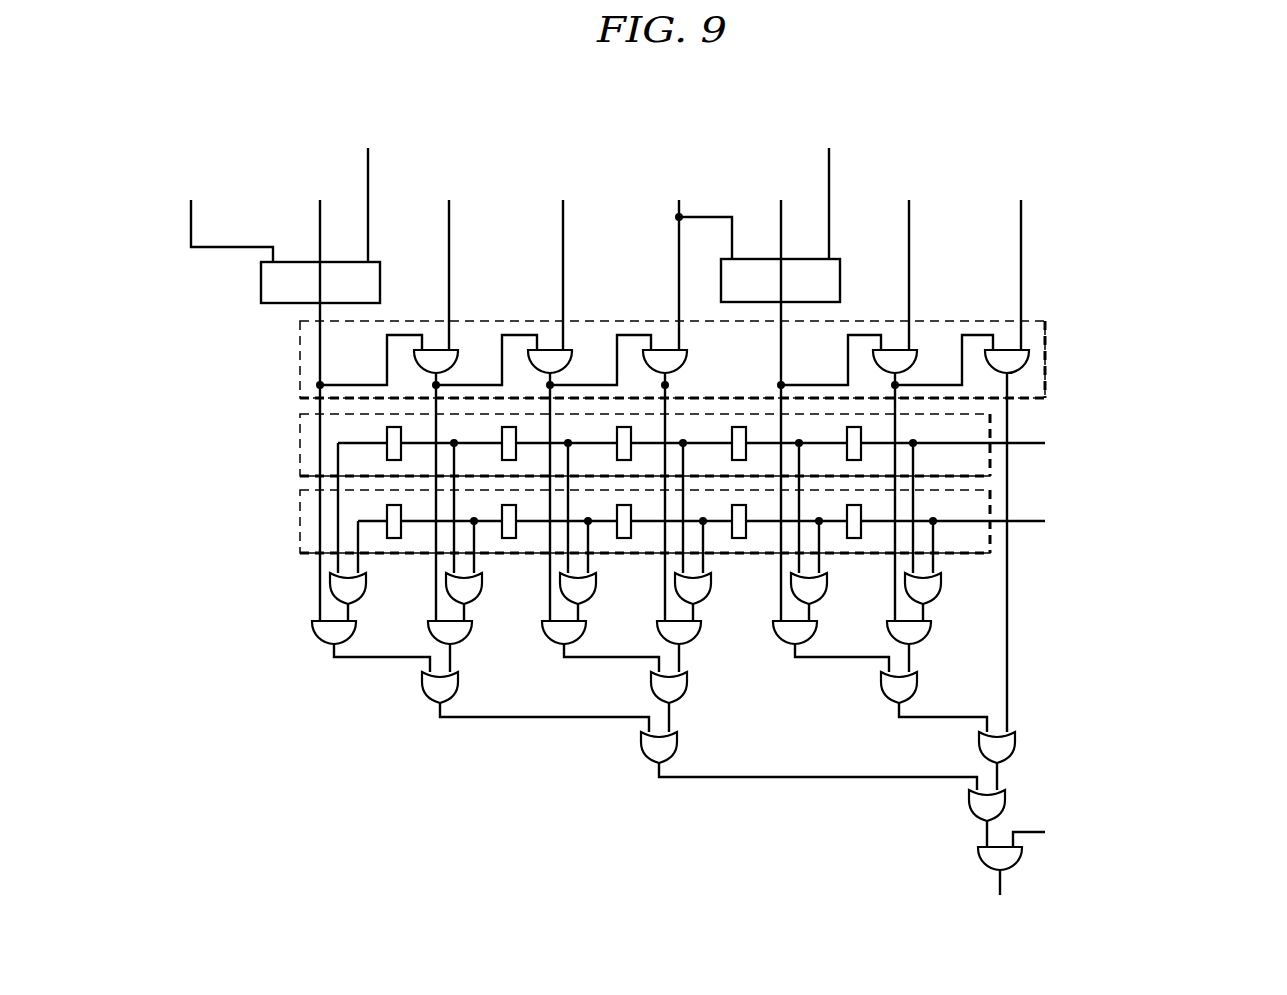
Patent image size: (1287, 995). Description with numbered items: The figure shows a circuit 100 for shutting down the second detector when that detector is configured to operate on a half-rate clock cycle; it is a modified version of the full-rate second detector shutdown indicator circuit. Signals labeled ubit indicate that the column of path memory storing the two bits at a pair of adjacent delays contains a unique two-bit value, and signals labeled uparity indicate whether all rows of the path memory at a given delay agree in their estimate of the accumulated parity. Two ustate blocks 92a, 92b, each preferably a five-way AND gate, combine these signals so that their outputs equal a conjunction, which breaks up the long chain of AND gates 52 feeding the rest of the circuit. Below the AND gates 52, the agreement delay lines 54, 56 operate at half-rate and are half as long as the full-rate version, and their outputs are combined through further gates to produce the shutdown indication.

The chain of AND gates 52 is at (300, 352).
The agreement delay line 54 is at (300, 443).
The agreement delay line 56 is at (300, 521).
The ustate block 92a is at (840, 282).
The ustate block 92b is at (261, 284).
The circuit 100 is at (1141, 181).